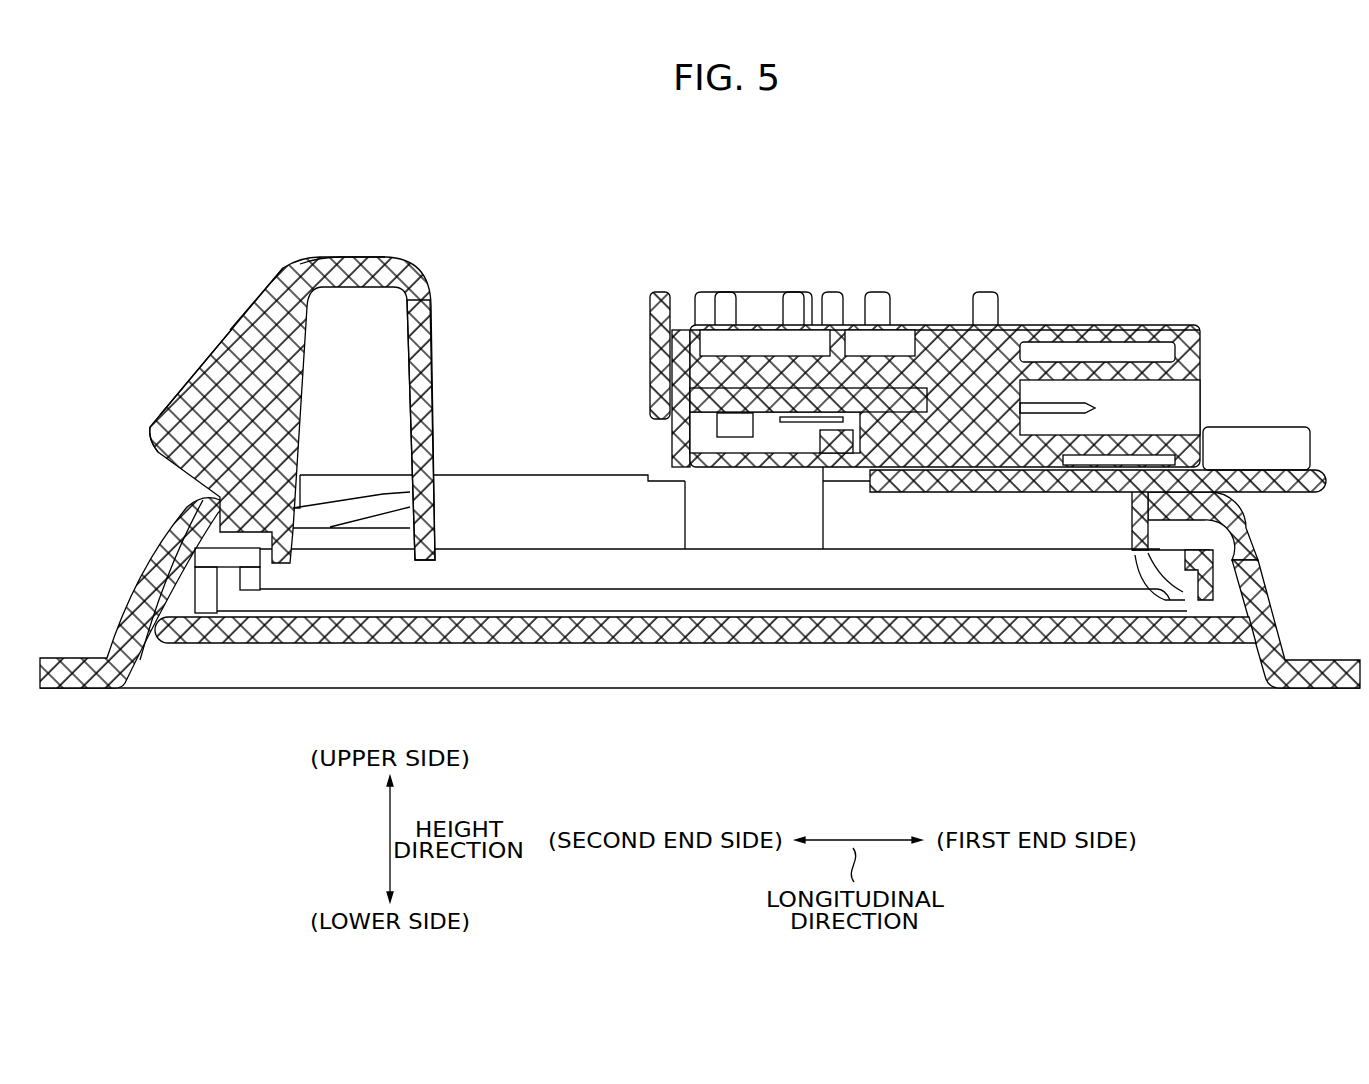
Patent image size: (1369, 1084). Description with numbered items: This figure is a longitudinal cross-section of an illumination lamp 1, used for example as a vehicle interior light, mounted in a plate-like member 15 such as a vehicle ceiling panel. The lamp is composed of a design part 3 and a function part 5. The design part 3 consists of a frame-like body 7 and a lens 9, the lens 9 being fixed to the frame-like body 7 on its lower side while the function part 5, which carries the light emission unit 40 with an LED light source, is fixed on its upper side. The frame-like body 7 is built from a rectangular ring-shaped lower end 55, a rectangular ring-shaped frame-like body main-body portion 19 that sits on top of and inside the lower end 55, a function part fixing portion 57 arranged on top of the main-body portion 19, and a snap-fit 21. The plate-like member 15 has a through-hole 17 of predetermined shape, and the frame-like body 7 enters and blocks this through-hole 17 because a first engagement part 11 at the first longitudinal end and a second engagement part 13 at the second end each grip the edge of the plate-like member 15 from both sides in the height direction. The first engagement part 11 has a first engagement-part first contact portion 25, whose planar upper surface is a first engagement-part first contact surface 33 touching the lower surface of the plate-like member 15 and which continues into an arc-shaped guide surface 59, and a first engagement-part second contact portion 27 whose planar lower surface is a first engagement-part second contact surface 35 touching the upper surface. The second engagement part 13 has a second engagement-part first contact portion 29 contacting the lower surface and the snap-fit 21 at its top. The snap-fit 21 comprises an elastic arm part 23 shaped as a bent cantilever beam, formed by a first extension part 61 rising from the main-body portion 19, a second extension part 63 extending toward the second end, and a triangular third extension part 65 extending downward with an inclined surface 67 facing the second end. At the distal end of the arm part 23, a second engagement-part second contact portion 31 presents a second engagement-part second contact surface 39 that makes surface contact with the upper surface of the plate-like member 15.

The illumination lamp 1 is at (980, 170).
The design part 3 is at (1033, 650).
The function part 5 is at (1118, 312).
The frame-like body 7 is at (937, 578).
The lens 9 is at (822, 648).
The first engagement part 11 is at (1253, 503).
The second engagement part 13 is at (134, 558).
The plate-like member 15 is at (1276, 605).
The through-hole 17 is at (490, 525).
The frame-like body main-body portion 19 is at (633, 541).
The snap-fit 21 is at (380, 238).
The arm part 23 is at (268, 276).
The first engagement-part first contact portion 25 is at (1190, 550).
The first engagement-part second contact portion 27 is at (1262, 467).
The second engagement-part first contact portion 29 is at (222, 540).
The second engagement-part second contact portion 31 is at (255, 545).
The first engagement-part first contact surface 33 is at (1133, 492).
The first engagement-part second contact surface 35 is at (1210, 485).
The second engagement-part second contact surface 39 is at (251, 545).
The light emission unit 40 is at (730, 458).
The lower end 55 is at (363, 578).
The function part fixing portion 57 is at (1020, 298).
The arc-shaped guide surface 59 is at (170, 522).
The first extension part 61 is at (440, 380).
The second extension part 63 is at (341, 257).
The third extension part 65 is at (232, 299).
The inclined surface 67 is at (164, 398).